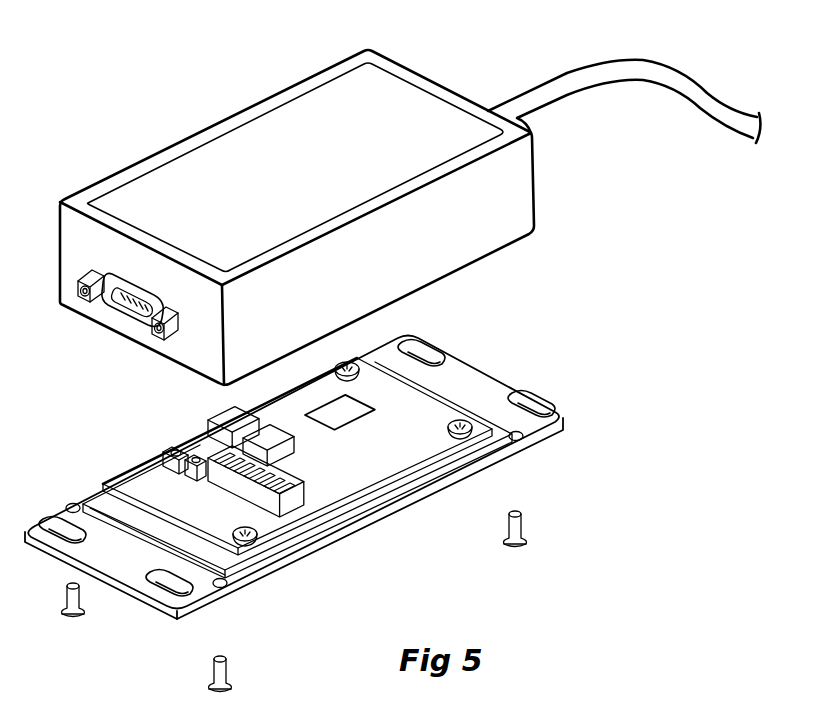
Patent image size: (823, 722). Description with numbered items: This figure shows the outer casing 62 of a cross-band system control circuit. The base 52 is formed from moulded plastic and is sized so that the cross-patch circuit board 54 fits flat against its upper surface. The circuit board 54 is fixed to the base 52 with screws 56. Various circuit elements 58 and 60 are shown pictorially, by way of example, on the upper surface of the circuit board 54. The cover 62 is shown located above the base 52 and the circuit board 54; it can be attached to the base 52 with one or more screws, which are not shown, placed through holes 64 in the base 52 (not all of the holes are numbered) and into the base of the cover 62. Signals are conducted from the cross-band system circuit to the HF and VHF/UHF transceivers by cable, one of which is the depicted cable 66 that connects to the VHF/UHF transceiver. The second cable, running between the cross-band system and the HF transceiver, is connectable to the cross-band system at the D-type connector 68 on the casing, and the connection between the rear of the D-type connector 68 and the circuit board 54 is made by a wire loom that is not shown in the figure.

The base 52 is at (478, 388).
The cross-patch circuit board 54 is at (390, 420).
The screws 56 is at (472, 435).
The circuit element 58 is at (163, 457).
The circuit element 60 is at (188, 418).
The outer casing (cover) 62 is at (195, 115).
The holes 64 is at (524, 437).
The cable 66 is at (678, 80).
The D-type connector 68 is at (117, 297).